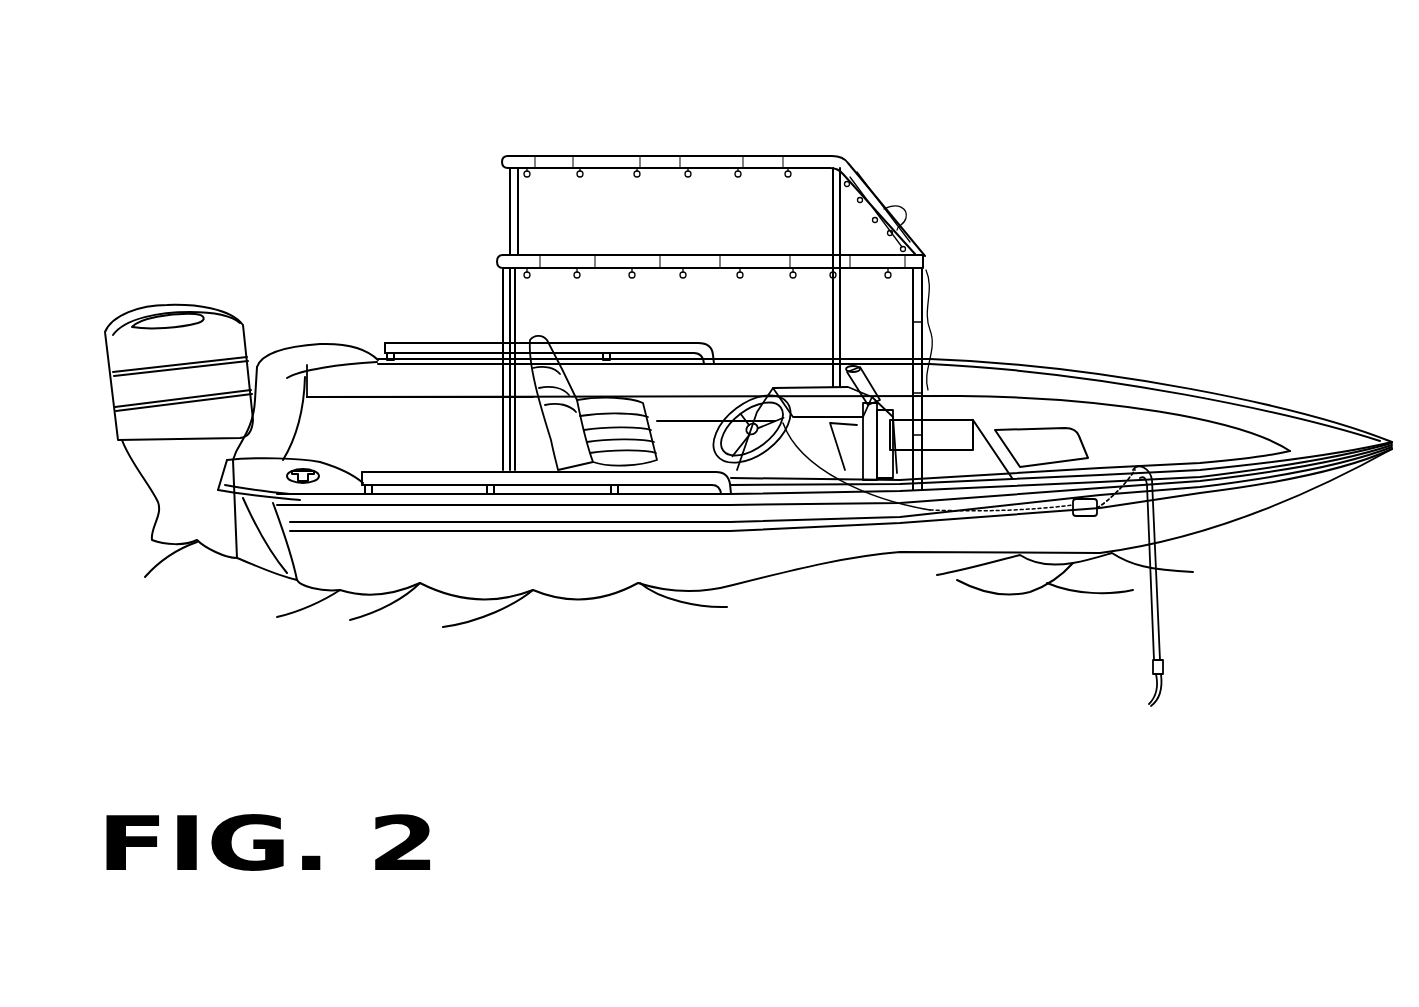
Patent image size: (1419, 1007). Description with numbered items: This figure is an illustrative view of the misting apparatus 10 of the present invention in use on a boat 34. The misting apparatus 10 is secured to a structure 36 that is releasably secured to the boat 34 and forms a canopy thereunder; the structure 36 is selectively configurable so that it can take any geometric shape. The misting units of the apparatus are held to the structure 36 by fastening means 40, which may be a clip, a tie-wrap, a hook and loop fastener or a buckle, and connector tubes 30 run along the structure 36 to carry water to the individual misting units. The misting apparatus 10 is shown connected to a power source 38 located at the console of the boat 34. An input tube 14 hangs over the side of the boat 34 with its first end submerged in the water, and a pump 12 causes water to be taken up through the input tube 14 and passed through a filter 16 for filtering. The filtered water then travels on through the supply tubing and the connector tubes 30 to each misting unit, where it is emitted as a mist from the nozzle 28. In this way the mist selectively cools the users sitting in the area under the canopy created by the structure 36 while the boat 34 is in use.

The misting apparatus 10 is at (985, 197).
The pump 12 is at (1082, 500).
The input tube 14 is at (1162, 614).
The filter 16 is at (1155, 668).
The nozzle 28 is at (630, 272).
The connector tubes 30 is at (558, 167).
The boat 34 is at (392, 408).
The structure 36 is at (505, 163).
The power source 38 is at (772, 428).
The fastening means 40 is at (917, 437).